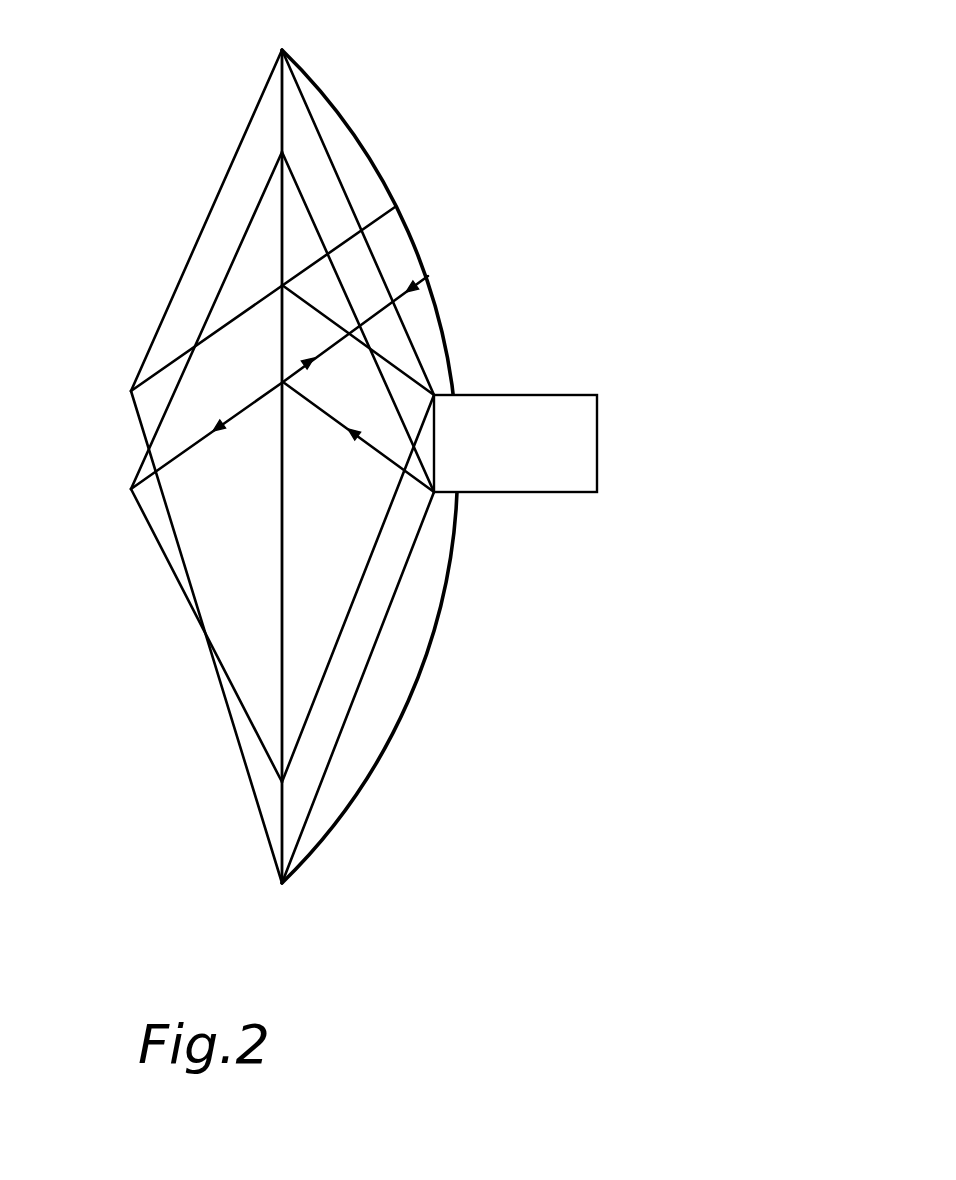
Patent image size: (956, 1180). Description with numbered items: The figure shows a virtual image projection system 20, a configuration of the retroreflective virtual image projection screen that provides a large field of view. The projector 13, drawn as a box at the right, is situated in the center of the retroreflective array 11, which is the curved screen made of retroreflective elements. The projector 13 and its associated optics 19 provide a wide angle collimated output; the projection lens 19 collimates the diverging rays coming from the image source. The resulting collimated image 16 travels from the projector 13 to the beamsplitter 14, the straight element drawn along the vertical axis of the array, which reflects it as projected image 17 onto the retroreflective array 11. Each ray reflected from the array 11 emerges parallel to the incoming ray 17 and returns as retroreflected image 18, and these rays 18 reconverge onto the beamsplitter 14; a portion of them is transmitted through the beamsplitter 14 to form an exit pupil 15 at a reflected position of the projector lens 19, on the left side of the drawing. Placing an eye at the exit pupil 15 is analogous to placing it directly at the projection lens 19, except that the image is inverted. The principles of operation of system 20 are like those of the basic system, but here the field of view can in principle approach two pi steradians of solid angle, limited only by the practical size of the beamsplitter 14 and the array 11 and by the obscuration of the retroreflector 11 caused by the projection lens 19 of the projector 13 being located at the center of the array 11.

The retroreflective array 11 is at (421, 681).
The projector 13 is at (552, 394).
The beamsplitter 14 is at (281, 498).
The exit pupil 15 is at (108, 465).
The collimated image 16 is at (352, 436).
The projected image 17 is at (314, 363).
The retroreflected image 18 is at (218, 426).
The projection lens 19 is at (453, 394).
The virtual image projection system 20 is at (468, 446).